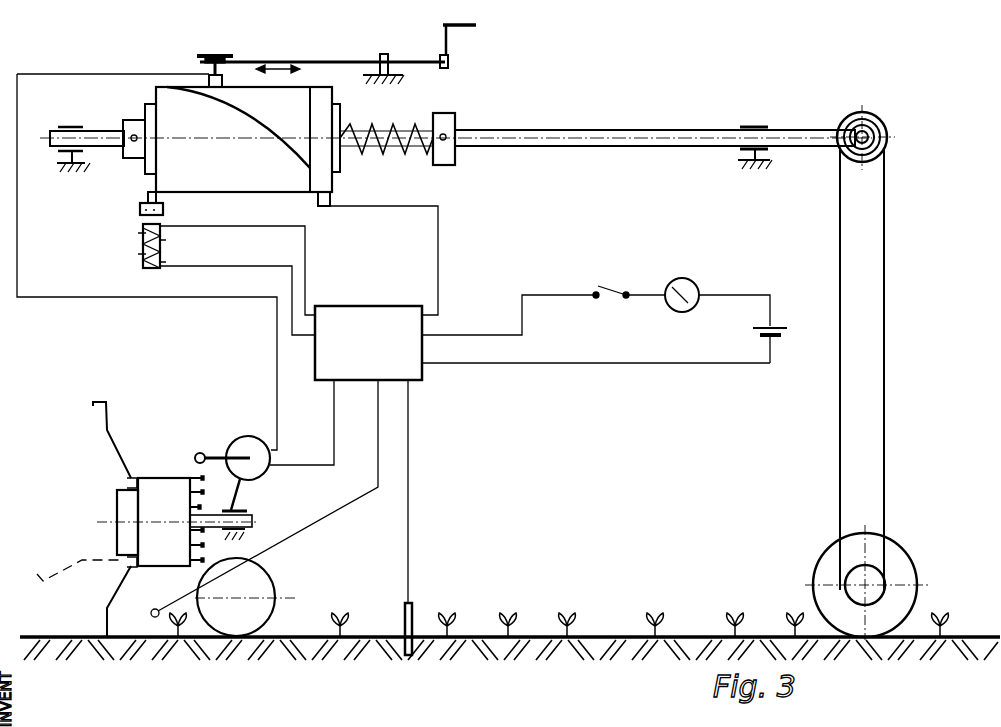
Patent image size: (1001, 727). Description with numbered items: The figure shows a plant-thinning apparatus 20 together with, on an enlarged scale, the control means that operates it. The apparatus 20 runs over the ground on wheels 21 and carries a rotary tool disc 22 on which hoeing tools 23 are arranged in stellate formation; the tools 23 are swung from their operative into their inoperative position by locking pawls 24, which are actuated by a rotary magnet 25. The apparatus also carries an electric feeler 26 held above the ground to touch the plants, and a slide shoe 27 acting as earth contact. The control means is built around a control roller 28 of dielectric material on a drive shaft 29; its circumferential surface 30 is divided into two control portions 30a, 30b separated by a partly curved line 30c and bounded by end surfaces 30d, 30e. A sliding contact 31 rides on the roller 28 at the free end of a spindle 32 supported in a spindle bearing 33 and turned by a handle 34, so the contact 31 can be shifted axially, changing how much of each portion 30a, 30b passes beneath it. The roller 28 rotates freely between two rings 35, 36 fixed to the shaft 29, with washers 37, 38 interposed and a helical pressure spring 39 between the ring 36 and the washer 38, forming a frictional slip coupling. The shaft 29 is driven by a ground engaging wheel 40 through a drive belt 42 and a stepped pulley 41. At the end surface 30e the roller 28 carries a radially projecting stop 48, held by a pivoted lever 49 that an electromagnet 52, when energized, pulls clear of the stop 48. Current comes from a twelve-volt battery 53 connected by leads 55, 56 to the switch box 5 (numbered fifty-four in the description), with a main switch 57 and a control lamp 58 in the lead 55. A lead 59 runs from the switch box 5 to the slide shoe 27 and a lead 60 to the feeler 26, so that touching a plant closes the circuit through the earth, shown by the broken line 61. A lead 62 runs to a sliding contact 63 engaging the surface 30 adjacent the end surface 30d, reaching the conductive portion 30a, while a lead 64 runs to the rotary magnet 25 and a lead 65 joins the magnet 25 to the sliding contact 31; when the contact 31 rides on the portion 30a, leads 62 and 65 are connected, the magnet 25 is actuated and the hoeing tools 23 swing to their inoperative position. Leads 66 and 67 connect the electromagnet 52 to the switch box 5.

The control unit 5 is at (412, 372).
The thinning apparatus 20 is at (115, 498).
The wheels 21 is at (277, 583).
The rotary tool disc 22 is at (162, 477).
The hoeing tools 23 is at (97, 398).
The locking pawls 24 is at (204, 492).
The rotary magnet 25 is at (243, 436).
The electric feeler 26 is at (154, 609).
The slide shoe 27 is at (413, 607).
The control roller 28 is at (242, 196).
The drive shaft 29 is at (610, 128).
The circumferential surface 30 is at (165, 86).
The control portion 30a is at (173, 173).
The control portion 30b is at (300, 103).
The partly curved line 30c is at (241, 107).
The end surface 30d is at (334, 186).
The end surface 30e is at (155, 95).
The sliding contact 31 is at (222, 79).
The spindle 32 is at (336, 60).
The spindle bearing 33 is at (384, 54).
The handle 34 is at (452, 43).
The ring 35 is at (121, 122).
The ring 36 is at (452, 120).
The washer 37 is at (147, 166).
The washer 38 is at (342, 163).
The helical pressure spring 39 is at (413, 124).
The ground engaging wheel 40 is at (905, 545).
The stepped pulley 41 is at (866, 110).
The drive belt 42 is at (885, 363).
The stop 48 is at (148, 196).
The pivoted lever 49 is at (165, 209).
The electromagnet 52 is at (141, 250).
The battery 53 is at (773, 325).
The lead 55 is at (561, 295).
The lead 56 is at (582, 363).
The main switch 57 is at (609, 284).
The control lamp 58 is at (682, 278).
The lead 59 is at (410, 482).
The lead 60 is at (318, 519).
The broken line 61 is at (192, 650).
The lead 62 is at (438, 248).
The sliding contact 63 is at (324, 207).
The lead 64 is at (334, 422).
The lead 65 is at (191, 298).
The lead 66 is at (304, 262).
The lead 67 is at (246, 268).